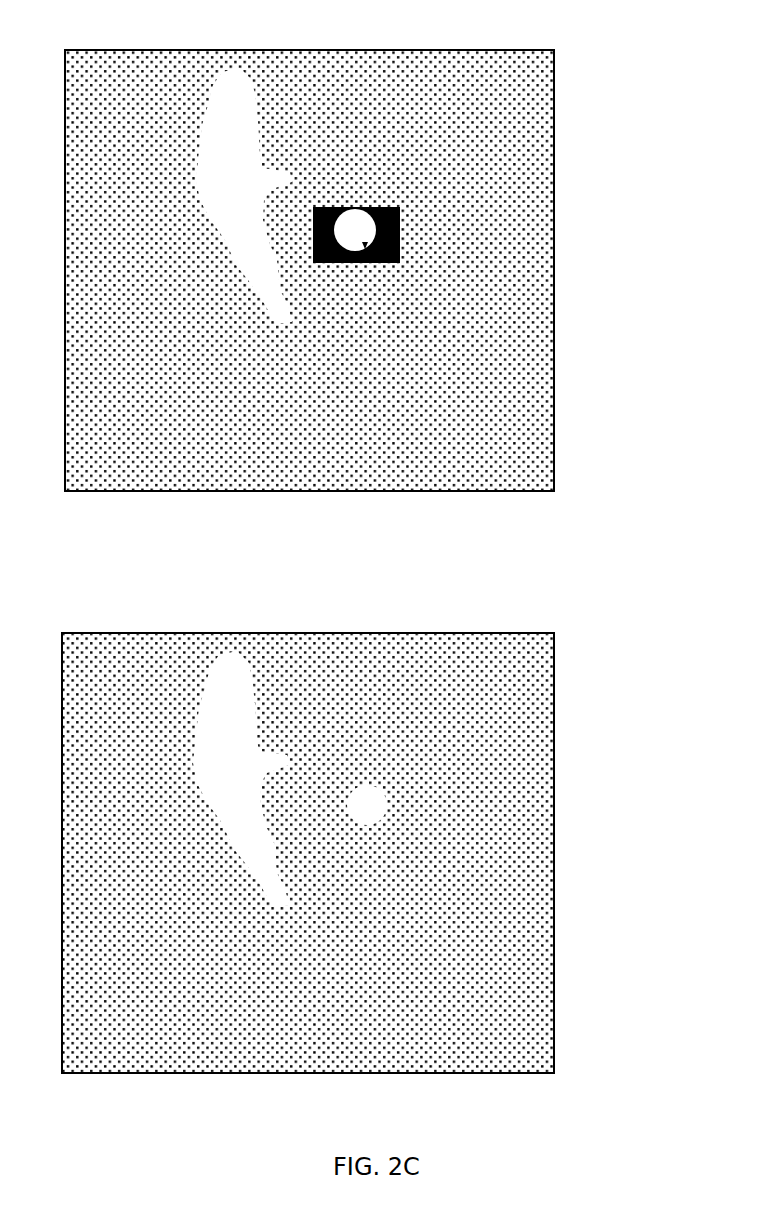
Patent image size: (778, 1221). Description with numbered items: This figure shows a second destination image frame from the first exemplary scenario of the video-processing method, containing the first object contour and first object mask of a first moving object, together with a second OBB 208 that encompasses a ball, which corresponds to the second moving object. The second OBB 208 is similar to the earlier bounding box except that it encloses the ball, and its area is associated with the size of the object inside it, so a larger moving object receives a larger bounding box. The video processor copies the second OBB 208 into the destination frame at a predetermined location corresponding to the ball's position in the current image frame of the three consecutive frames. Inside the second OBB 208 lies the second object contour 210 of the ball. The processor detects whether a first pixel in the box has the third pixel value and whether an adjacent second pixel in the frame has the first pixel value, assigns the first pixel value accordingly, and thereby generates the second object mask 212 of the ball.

The second OBB 208 is at (388, 208).
The second object contour 210 is at (402, 220).
The second object mask 212 is at (367, 803).